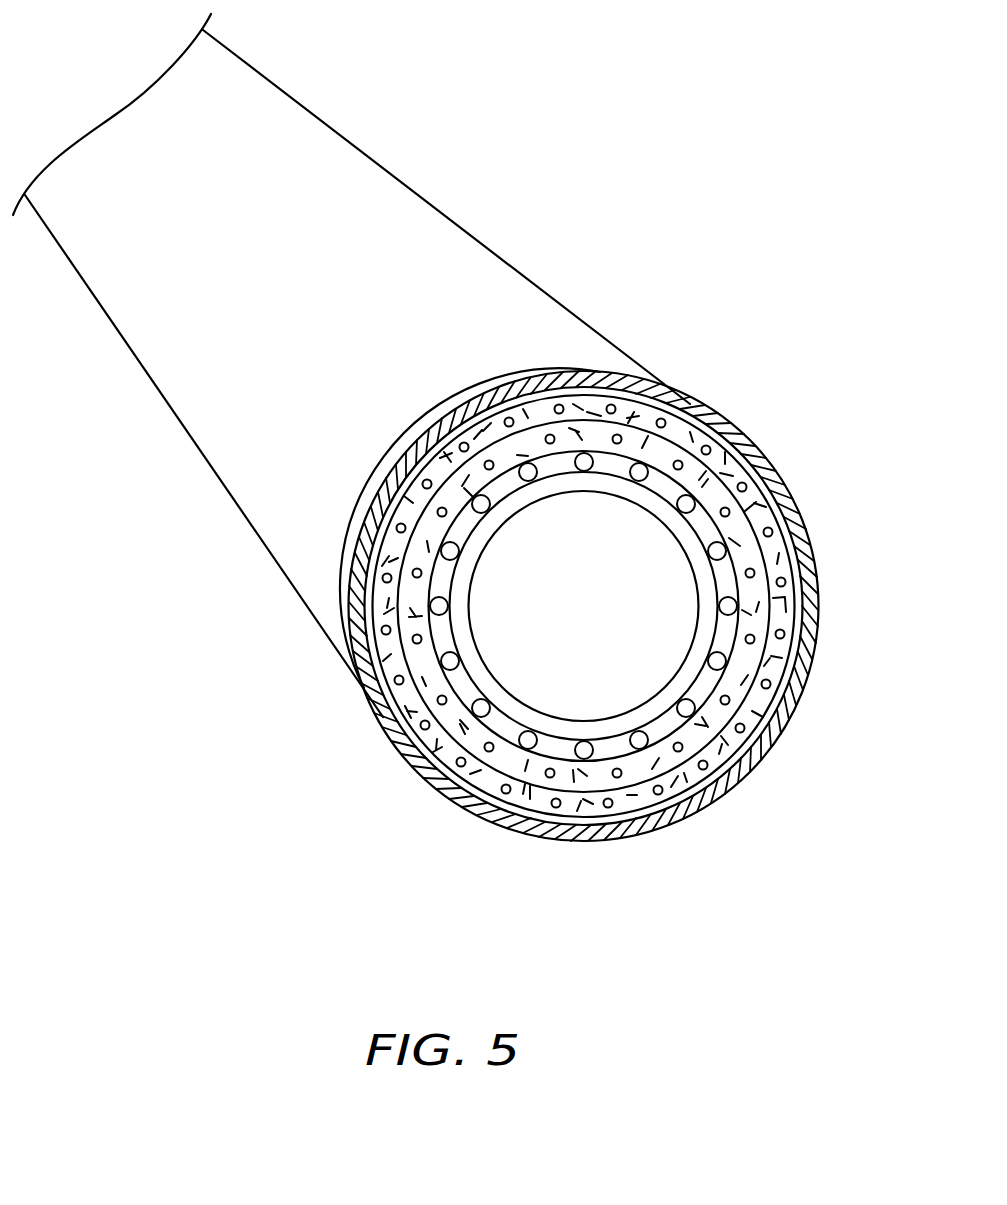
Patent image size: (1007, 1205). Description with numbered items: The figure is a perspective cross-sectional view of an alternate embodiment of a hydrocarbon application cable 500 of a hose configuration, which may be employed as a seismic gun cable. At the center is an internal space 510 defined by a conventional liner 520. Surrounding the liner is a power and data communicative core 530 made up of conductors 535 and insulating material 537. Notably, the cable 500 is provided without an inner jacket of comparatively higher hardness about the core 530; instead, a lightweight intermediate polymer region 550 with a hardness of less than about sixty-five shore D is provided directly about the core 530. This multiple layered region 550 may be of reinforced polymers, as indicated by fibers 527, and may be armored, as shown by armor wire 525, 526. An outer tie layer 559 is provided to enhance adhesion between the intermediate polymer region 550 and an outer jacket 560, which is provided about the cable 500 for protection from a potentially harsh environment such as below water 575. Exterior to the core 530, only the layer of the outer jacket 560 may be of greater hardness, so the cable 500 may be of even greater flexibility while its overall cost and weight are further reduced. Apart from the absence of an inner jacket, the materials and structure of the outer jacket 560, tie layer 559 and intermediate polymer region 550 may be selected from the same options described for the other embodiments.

The hydrocarbon application cable 500 is at (579, 129).
The internal space 510 is at (604, 618).
The liner 520 is at (483, 680).
The armor wire 525 is at (729, 507).
The armor wire 526 is at (771, 684).
The fibers 527 is at (748, 548).
The power and data communicative core 530 is at (540, 458).
The conductors 535 is at (585, 453).
The insulating material 537 is at (657, 477).
The intermediate polymer region 550 is at (625, 802).
The outer tie layer 559 is at (800, 586).
The outer jacket 560 is at (312, 324).
The water 575 is at (140, 445).